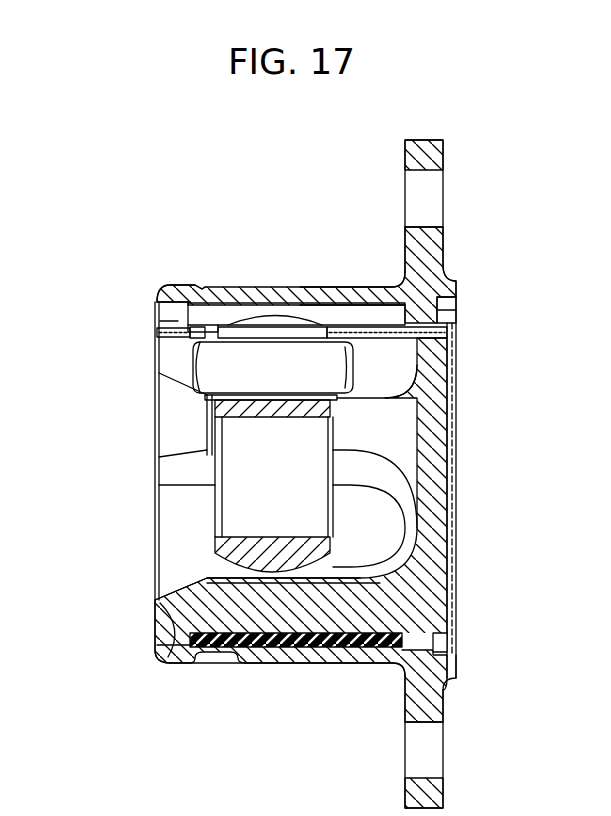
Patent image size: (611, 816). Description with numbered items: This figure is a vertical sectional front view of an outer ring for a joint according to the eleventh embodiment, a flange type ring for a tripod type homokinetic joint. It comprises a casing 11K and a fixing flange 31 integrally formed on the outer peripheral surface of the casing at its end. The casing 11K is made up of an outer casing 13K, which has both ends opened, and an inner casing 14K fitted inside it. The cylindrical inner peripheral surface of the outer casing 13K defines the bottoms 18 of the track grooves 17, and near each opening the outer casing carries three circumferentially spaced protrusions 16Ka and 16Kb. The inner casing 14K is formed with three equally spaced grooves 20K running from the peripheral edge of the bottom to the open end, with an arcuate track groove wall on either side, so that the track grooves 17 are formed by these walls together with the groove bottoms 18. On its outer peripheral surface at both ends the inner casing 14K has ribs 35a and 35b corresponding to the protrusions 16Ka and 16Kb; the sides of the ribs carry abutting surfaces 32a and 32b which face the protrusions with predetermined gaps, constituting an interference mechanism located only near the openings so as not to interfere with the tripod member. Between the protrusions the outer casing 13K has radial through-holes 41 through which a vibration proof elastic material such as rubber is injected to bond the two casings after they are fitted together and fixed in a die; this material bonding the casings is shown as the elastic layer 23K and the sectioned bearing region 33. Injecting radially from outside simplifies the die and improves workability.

The casing 11K is at (373, 278).
The outer casing 13K is at (268, 297).
The inner casing 14K is at (237, 605).
The protrusion 16Ka is at (442, 289).
The protrusion 16Kb is at (155, 289).
The track groove 17 is at (210, 312).
The bottom of track groove 18 is at (297, 222).
The groove 20K is at (390, 372).
The outer shell 23K is at (183, 660).
The fixing flange 31 is at (420, 258).
The abutting surface 32a is at (440, 323).
The abutting surface 32b is at (178, 321).
The bearing cup 33 is at (237, 490).
The rib 35a is at (425, 633).
The rib 35b is at (155, 617).
The radial through-hole 41 is at (293, 648).